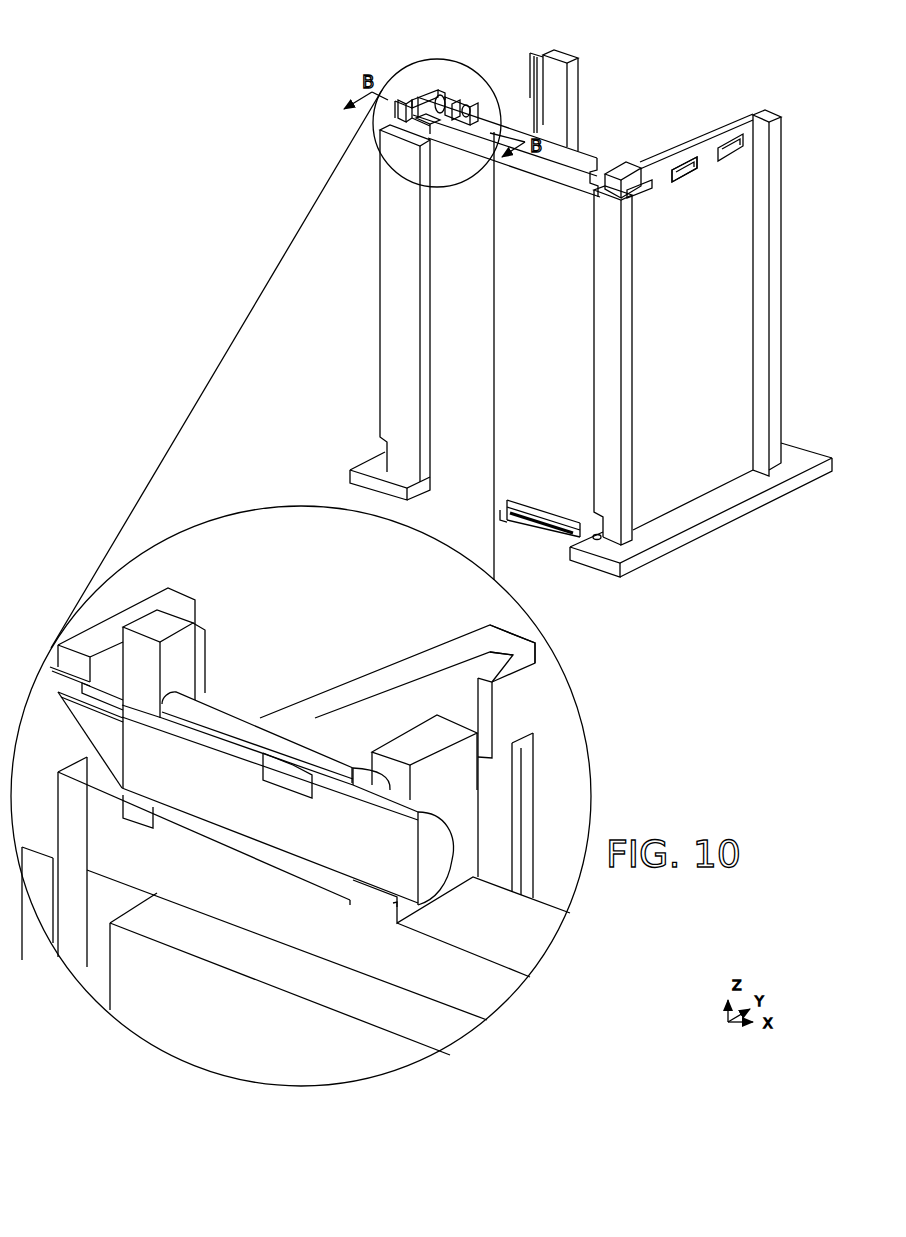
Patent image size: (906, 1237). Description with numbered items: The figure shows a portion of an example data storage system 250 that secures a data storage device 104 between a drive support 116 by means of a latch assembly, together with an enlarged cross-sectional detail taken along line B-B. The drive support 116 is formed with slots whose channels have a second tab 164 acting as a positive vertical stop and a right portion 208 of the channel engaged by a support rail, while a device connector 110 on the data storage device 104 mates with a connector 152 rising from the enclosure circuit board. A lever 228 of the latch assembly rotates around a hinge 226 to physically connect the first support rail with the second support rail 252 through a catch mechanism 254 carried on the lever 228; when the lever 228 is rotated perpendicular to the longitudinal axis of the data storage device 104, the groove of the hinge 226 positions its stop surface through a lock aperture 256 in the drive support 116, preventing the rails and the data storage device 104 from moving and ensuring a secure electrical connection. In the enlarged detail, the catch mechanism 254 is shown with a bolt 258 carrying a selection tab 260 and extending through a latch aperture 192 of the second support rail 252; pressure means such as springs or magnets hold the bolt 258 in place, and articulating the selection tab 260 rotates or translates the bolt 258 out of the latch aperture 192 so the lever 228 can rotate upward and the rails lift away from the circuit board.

The data storage system 250 is at (735, 51).
The catch mechanism 254 is at (450, 81).
The drive support 116 is at (579, 89).
The hinge 226 is at (642, 158).
The lock aperture 256 is at (682, 180).
The data storage device 104 is at (569, 360).
The device connector 110 is at (558, 516).
The connector 152 is at (535, 532).
The second support rail 252 is at (181, 594).
The selection tab 260 is at (196, 668).
The bolt 258 is at (220, 782).
The latch aperture 192 is at (61, 746).
The right portion 208 is at (494, 658).
The second tab 164 is at (537, 715).
The lever 228 is at (533, 940).